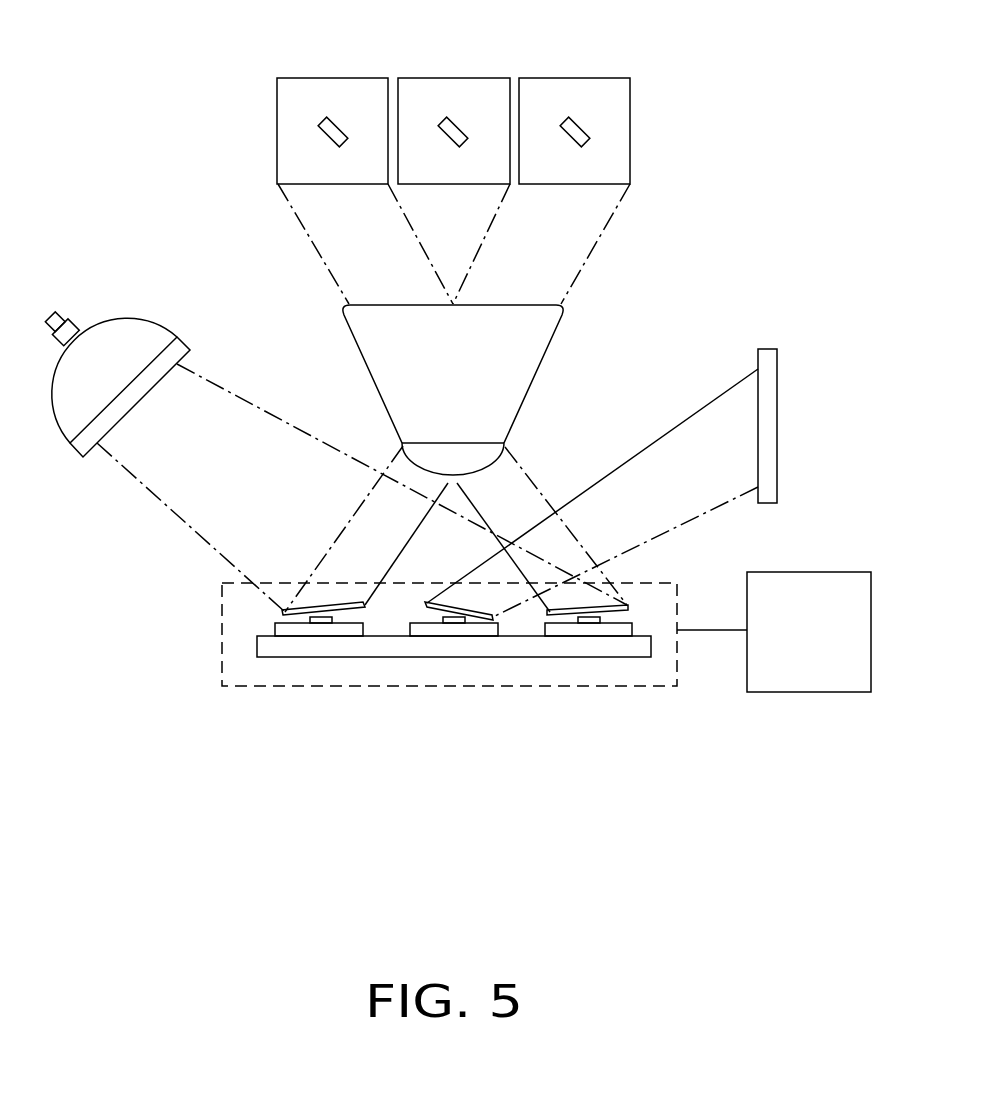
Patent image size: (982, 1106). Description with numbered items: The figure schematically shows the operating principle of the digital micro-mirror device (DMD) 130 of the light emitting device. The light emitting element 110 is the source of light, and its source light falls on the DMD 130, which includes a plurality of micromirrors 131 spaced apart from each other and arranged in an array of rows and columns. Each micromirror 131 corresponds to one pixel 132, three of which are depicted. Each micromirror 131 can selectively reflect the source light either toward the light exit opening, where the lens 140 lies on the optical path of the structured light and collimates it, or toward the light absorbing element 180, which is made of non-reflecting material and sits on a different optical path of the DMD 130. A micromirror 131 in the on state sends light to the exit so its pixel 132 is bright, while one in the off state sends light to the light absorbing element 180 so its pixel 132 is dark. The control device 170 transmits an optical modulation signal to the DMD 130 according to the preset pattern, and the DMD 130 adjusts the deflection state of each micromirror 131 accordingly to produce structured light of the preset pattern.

The light emitting element 110 is at (130, 330).
The digital micro-mirror device (DMD) 130 is at (206, 639).
The micromirror 131 is at (333, 610).
The pixel 132 is at (467, 90).
The lens 140 is at (548, 328).
The control device 170 is at (795, 572).
The light absorbing element 180 is at (770, 410).